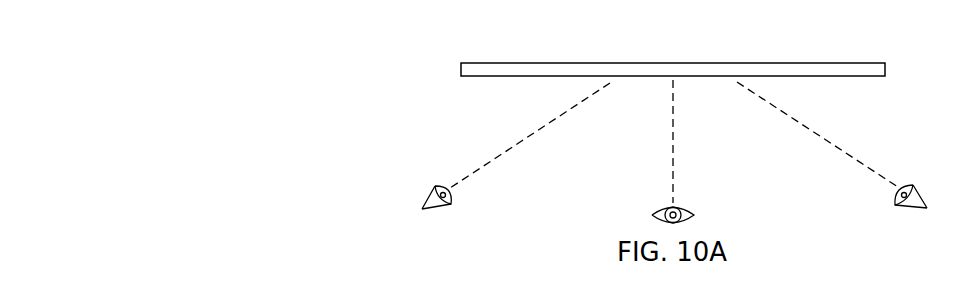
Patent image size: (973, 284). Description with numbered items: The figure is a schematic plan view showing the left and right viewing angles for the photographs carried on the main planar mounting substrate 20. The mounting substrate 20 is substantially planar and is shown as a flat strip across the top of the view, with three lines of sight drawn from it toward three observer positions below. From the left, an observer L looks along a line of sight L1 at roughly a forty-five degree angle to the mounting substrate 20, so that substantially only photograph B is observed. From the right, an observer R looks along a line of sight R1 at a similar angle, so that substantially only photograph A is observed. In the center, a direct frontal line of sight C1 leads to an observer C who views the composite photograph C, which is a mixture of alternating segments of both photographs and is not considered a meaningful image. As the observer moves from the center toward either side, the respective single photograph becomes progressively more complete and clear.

The mounting substrate 20 is at (795, 55).
The composite photograph C is at (688, 213).
The direct line of sight C1 is at (670, 152).
The left viewer L is at (433, 192).
The line of sight L1 is at (518, 142).
The right viewer R is at (915, 188).
The line of sight R1 is at (827, 143).